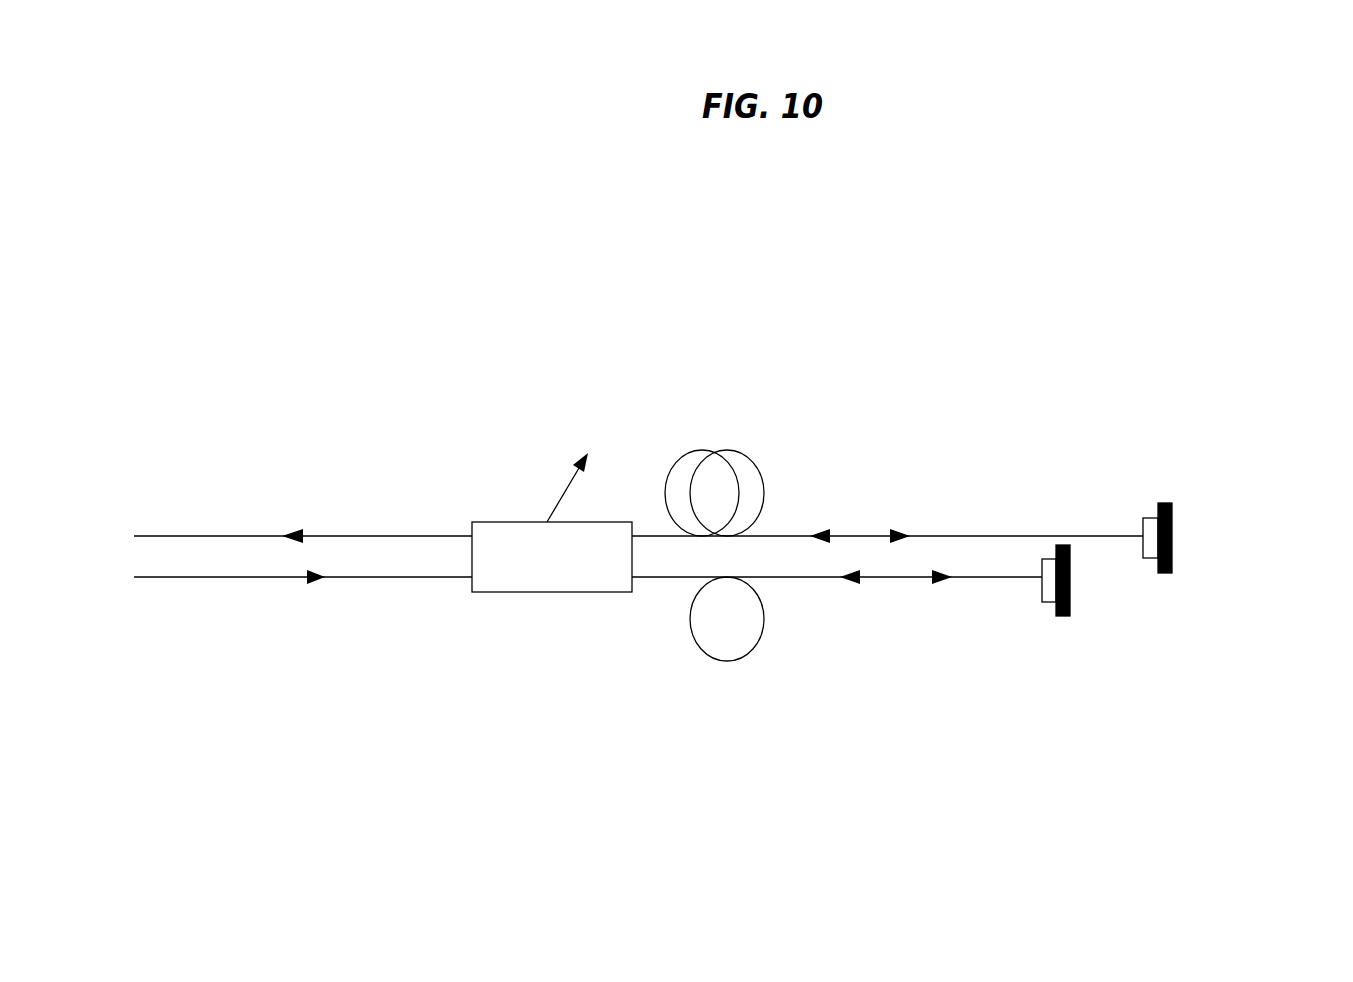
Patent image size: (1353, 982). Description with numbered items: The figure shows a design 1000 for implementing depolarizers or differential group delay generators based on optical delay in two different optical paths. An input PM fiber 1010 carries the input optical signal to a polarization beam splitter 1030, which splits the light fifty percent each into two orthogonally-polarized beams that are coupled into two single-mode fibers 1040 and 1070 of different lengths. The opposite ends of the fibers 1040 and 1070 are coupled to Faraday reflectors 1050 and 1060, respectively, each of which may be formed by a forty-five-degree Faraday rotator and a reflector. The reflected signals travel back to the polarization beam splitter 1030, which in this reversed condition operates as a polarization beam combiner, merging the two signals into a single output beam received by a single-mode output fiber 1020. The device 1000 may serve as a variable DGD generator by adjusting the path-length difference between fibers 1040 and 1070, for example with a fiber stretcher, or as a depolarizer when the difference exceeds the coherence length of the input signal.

The design 1000 is at (539, 263).
The input PM fiber 1010 is at (368, 577).
The single-mode output fiber 1020 is at (164, 535).
The polarization beam splitter 1030 is at (515, 483).
The single-mode fiber 1040 is at (730, 657).
The Faraday reflector 1050 is at (1096, 622).
The Faraday reflector 1060 is at (1208, 500).
The single-mode fiber 1070 is at (748, 462).